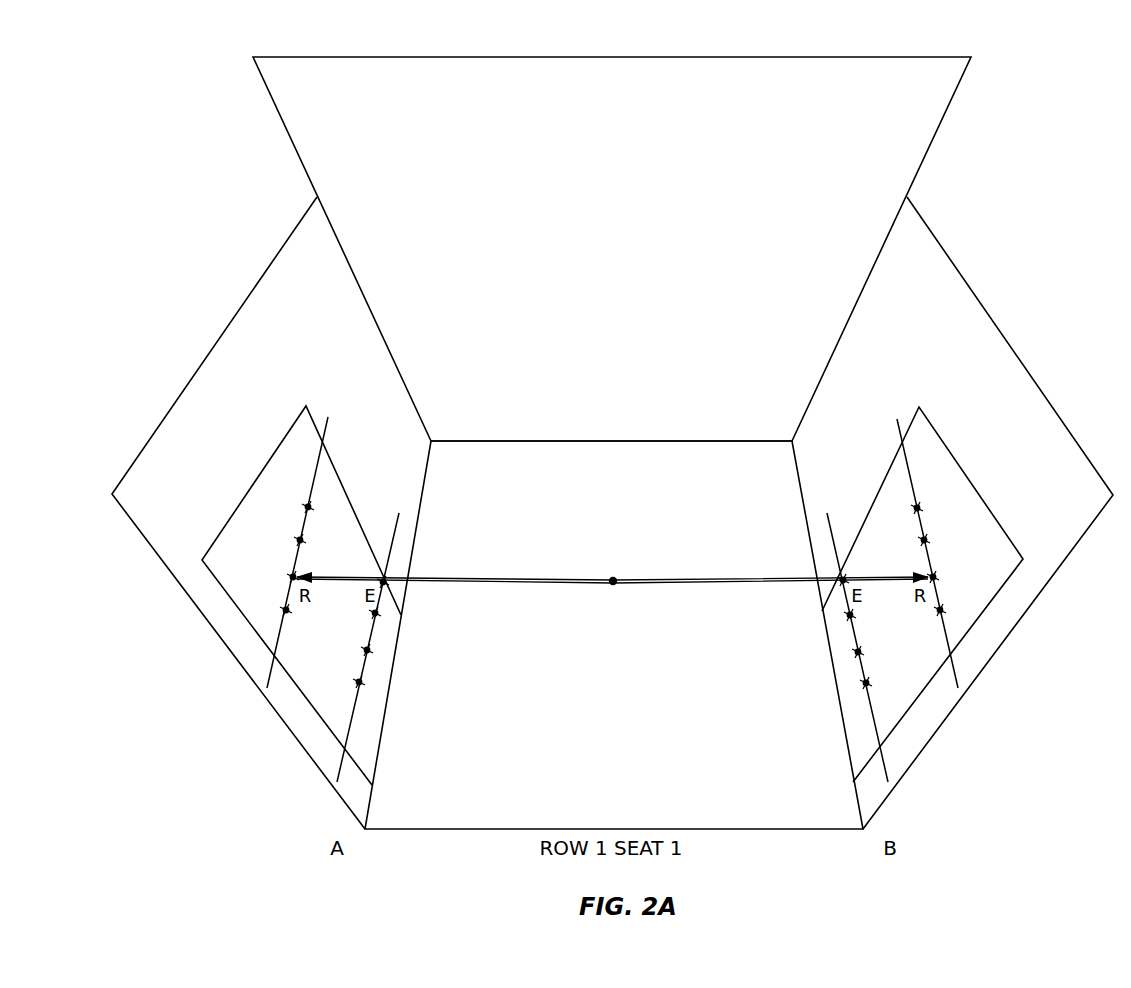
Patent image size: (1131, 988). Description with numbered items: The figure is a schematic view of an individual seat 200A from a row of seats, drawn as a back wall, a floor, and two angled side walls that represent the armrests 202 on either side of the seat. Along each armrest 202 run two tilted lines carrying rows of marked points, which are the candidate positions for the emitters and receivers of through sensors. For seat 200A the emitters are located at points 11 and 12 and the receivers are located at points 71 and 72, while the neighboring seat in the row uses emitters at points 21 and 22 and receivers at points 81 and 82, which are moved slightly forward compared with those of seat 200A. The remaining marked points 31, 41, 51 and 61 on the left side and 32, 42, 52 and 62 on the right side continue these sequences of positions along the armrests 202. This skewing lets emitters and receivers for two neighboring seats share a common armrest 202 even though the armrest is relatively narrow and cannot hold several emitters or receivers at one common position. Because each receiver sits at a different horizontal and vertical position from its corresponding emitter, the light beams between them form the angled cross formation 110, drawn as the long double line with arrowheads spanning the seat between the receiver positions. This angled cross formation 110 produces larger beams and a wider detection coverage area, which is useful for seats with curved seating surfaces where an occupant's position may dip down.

The seat 200A is at (1041, 50).
The armrest 202 is at (218, 340).
The angled cross formation 110 is at (615, 575).
The emitter point 11 is at (390, 593).
The emitter point 21 is at (384, 626).
The speaker position 31 is at (375, 662).
The speaker position 41 is at (368, 694).
The speaker position 51 is at (297, 499).
The speaker position 61 is at (289, 531).
The receiver point 71 is at (281, 568).
The receiver point 81 is at (274, 600).
The emitter point 12 is at (835, 592).
The emitter point 22 is at (842, 627).
The speaker position 32 is at (850, 663).
The speaker position 42 is at (858, 695).
The speaker position 52 is at (929, 499).
The speaker position 62 is at (936, 531).
The receiver point 72 is at (945, 568).
The receiver point 82 is at (952, 600).